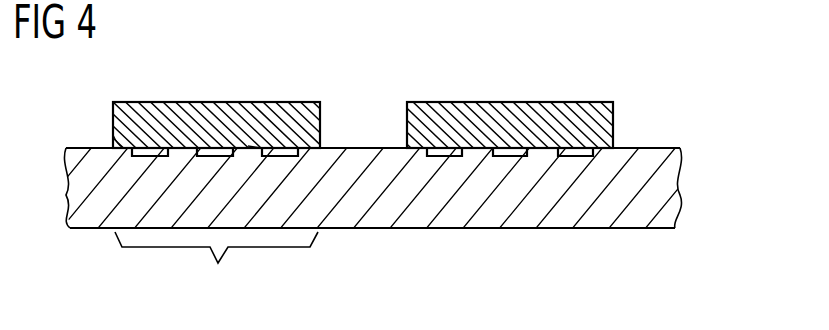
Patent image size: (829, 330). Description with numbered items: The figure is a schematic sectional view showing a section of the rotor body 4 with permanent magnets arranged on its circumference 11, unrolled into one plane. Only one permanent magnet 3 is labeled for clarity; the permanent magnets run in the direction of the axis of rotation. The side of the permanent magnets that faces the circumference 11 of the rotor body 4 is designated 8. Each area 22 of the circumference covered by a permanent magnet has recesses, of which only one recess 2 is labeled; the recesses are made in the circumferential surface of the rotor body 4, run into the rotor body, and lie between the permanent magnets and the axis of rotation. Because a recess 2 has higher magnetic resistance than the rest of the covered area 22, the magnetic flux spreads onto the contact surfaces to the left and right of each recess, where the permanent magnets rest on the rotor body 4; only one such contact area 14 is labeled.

The recess 2 is at (222, 150).
The permanent magnet 3 is at (176, 122).
The rotor body 4 is at (662, 177).
The side of the permanent magnets facing the circumference 8 is at (113, 138).
The circumference 11 is at (363, 147).
The contact area 14 is at (247, 148).
The area covered by the permanent magnet 22 is at (216, 267).